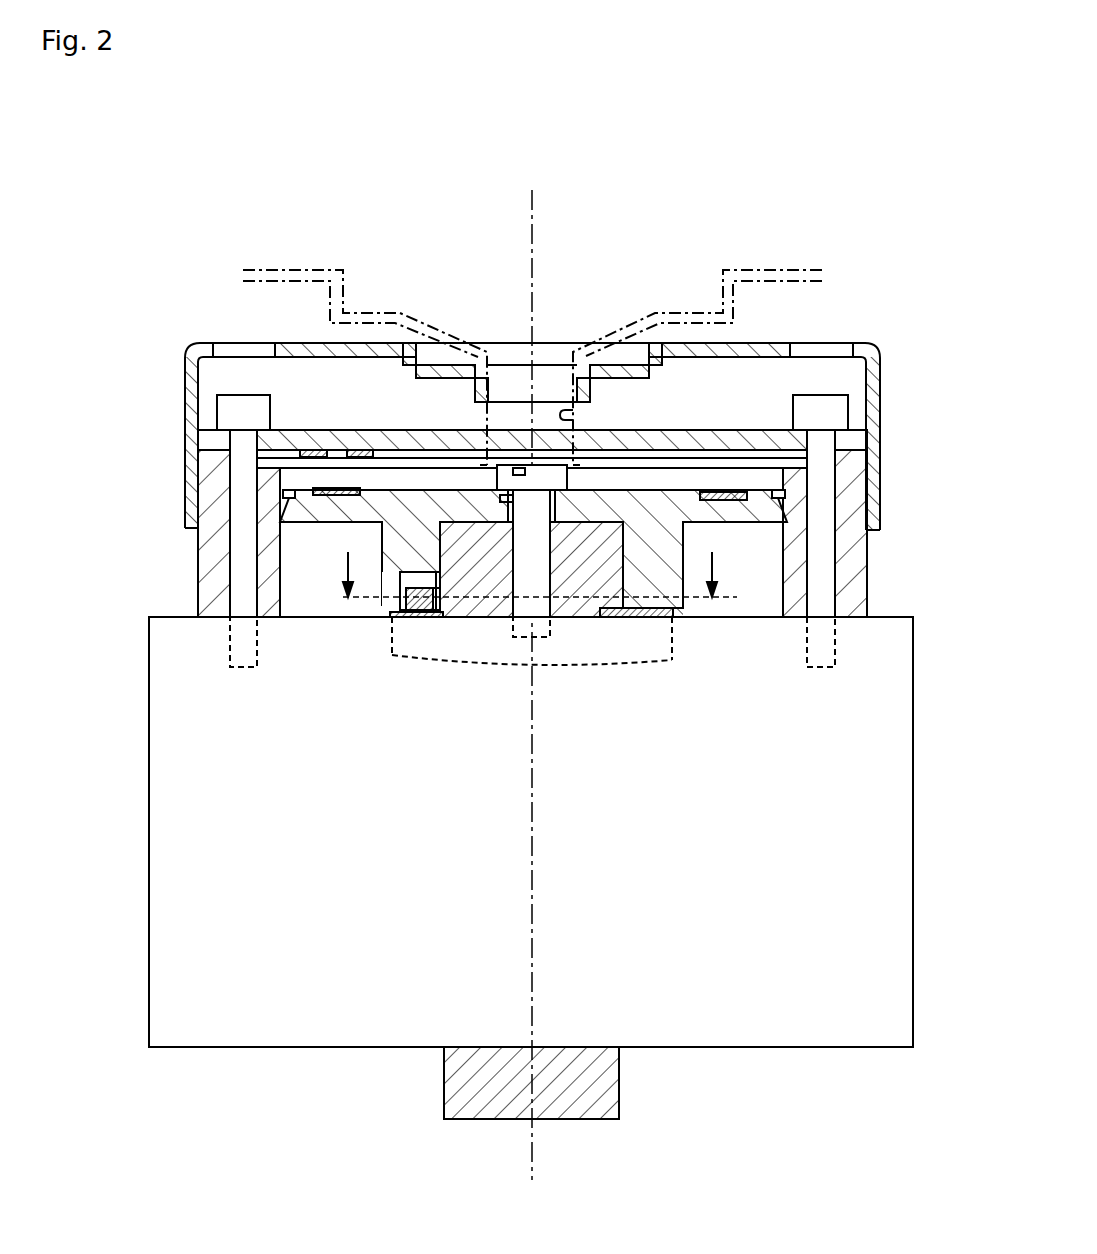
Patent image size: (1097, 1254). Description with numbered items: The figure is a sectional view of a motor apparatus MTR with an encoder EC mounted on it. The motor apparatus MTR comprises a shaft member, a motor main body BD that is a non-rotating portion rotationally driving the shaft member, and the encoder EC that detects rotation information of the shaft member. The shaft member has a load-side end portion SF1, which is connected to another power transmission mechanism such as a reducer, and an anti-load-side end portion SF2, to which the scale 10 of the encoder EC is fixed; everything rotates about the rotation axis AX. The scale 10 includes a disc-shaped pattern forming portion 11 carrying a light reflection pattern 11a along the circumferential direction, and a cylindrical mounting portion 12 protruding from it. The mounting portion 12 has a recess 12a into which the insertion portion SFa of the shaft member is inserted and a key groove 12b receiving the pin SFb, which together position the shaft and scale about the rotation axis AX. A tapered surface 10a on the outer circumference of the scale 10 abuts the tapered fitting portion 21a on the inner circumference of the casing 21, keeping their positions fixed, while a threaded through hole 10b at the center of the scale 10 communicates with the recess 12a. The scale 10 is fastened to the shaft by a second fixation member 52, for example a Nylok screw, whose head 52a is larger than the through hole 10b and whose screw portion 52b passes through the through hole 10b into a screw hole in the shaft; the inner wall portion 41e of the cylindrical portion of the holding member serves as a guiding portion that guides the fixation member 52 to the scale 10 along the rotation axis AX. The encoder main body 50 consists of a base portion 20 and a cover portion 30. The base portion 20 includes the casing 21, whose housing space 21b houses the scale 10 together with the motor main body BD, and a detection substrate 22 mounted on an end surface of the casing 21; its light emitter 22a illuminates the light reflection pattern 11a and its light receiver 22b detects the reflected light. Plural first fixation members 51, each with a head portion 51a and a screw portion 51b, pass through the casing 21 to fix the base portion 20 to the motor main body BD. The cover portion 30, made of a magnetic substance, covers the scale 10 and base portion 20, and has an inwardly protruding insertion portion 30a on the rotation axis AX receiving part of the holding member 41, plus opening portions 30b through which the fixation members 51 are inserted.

The scale 10 is at (607, 463).
The tapered surface 10a is at (786, 496).
The through hole 10b is at (538, 502).
The pattern forming portion 11 is at (462, 447).
The light reflection pattern 11a is at (313, 491).
The mounting portion 12 is at (545, 561).
The recess 12a is at (510, 500).
The key groove 12b is at (390, 614).
The base portion 20 is at (483, 523).
The casing 21 is at (193, 597).
The fitting portion 21a is at (297, 468).
The housing space 21b is at (752, 610).
The detection substrate 22 is at (598, 414).
The light emitter 22a is at (318, 451).
The light receiver 22b is at (366, 451).
The cover portion 30 is at (501, 400).
The insertion portion 30a is at (598, 392).
The opening portions 30b is at (840, 345).
The lead wire 41 is at (532, 331).
The inner wall portion 41e is at (573, 415).
The main body 50 is at (479, 471).
The fixation members 51 is at (456, 507).
The head portion 51a is at (228, 405).
The screw portion 51b is at (228, 462).
The fixation member 52 is at (469, 364).
The head 52a is at (519, 474).
The screw portion 52b is at (508, 497).
The rotation axis AX is at (501, 666).
The motor main body BD is at (149, 698).
The encoder EC is at (505, 470).
The motor apparatus MTR is at (492, 891).
The load-side end portion SF1 is at (676, 682).
The anti-load-side end portion SF2 is at (453, 1078).
The insertion portion SFa is at (430, 592).
The pin SFb is at (410, 592).